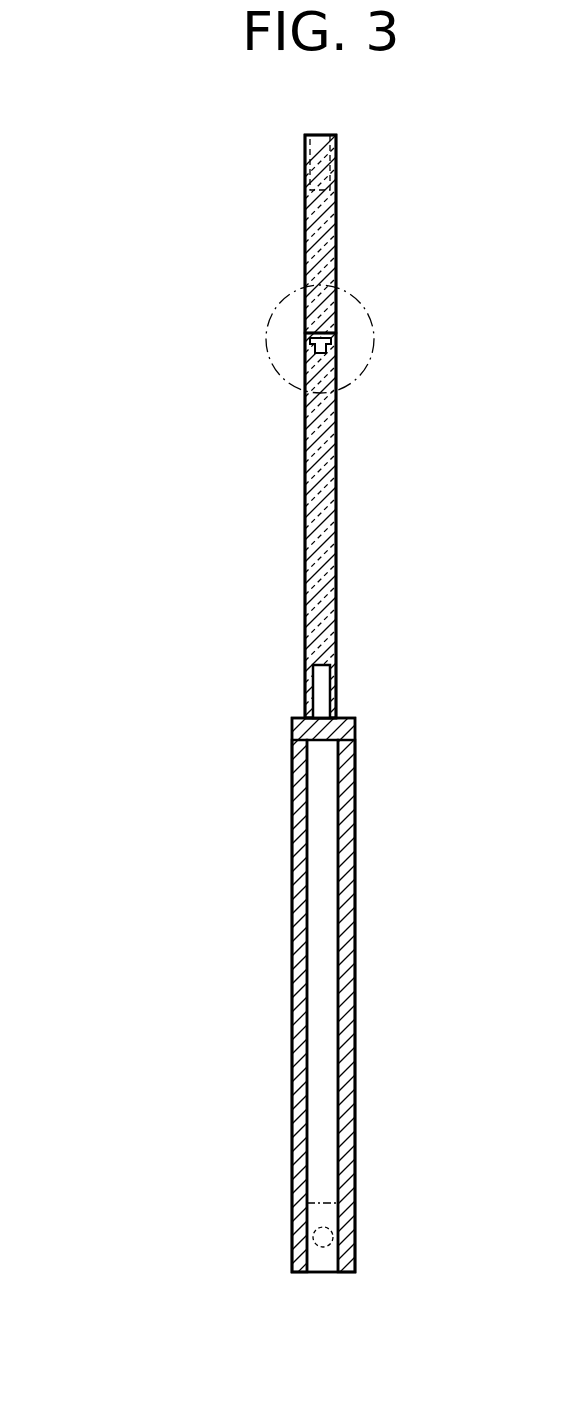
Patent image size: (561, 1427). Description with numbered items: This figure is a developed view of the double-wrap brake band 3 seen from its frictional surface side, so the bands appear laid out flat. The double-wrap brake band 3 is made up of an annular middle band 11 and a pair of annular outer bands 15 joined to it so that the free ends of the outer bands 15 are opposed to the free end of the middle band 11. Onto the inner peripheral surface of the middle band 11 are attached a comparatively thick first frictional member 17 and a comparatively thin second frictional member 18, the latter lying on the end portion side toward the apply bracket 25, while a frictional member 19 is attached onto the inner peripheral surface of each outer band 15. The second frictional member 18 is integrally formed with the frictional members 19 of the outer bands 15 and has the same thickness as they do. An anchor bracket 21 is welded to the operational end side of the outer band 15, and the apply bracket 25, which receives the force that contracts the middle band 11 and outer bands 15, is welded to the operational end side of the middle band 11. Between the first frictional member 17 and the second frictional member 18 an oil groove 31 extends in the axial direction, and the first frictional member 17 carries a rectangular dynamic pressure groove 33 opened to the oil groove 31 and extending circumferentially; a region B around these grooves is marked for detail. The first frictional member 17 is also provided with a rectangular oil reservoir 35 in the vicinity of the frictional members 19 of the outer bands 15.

The double-wrap brake band 3 is at (165, 480).
The middle band 11 is at (300, 492).
The outer band 15 is at (290, 1083).
The first frictional member 17 is at (336, 520).
The second frictional member 18 is at (337, 226).
The frictional member 19 is at (292, 942).
The anchor bracket 21 is at (322, 1267).
The apply bracket 25 is at (333, 174).
The oil groove 31 is at (337, 334).
The dynamic pressure groove 33 is at (333, 346).
The oil reservoir 35 is at (331, 689).
The detail region B is at (272, 308).